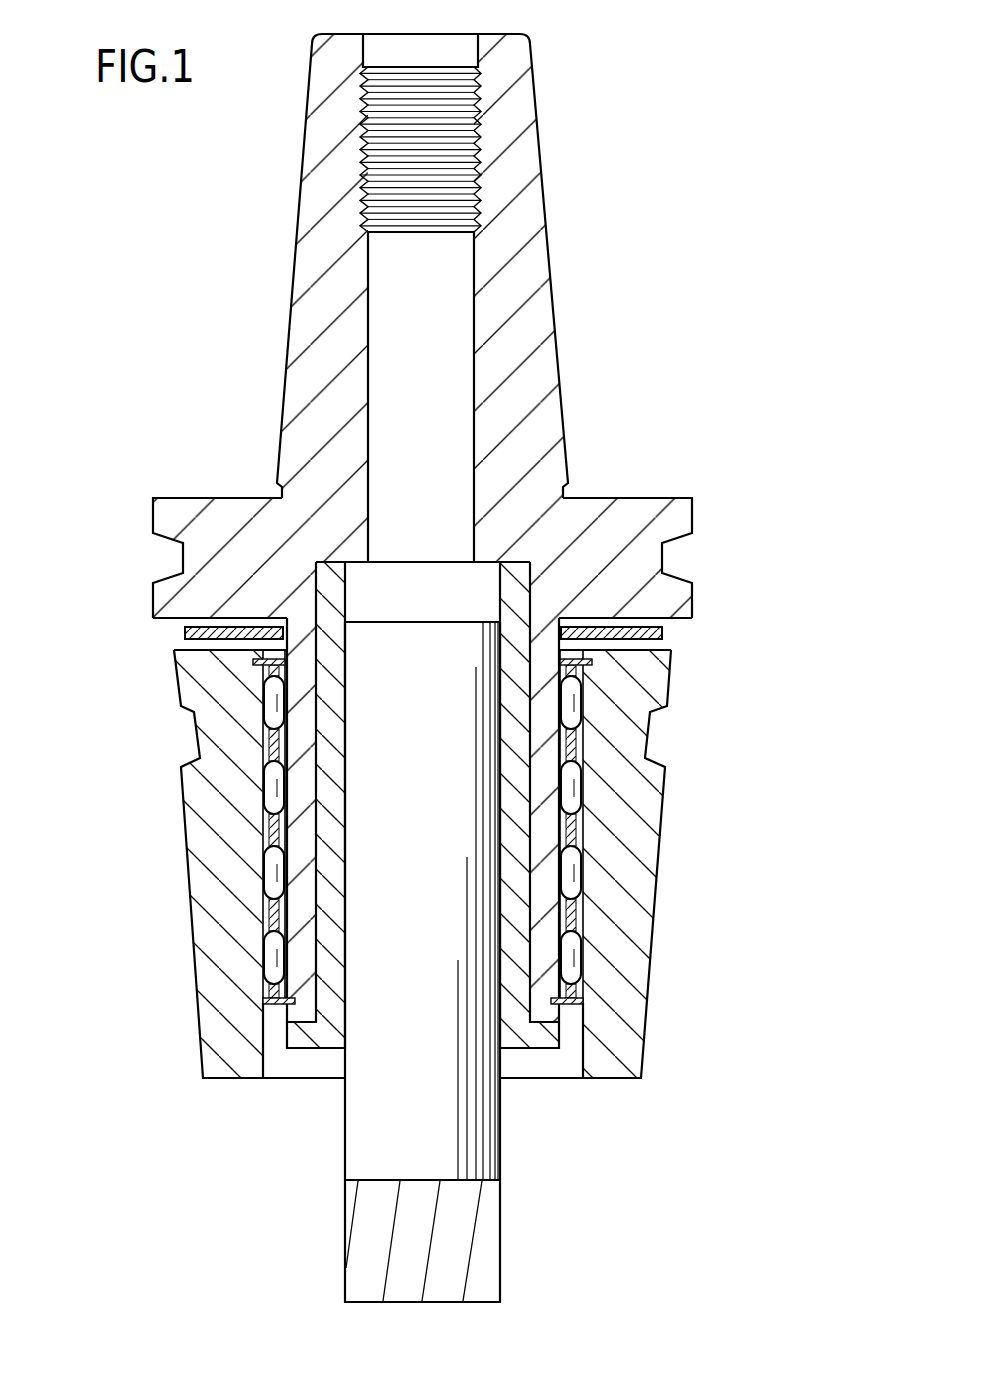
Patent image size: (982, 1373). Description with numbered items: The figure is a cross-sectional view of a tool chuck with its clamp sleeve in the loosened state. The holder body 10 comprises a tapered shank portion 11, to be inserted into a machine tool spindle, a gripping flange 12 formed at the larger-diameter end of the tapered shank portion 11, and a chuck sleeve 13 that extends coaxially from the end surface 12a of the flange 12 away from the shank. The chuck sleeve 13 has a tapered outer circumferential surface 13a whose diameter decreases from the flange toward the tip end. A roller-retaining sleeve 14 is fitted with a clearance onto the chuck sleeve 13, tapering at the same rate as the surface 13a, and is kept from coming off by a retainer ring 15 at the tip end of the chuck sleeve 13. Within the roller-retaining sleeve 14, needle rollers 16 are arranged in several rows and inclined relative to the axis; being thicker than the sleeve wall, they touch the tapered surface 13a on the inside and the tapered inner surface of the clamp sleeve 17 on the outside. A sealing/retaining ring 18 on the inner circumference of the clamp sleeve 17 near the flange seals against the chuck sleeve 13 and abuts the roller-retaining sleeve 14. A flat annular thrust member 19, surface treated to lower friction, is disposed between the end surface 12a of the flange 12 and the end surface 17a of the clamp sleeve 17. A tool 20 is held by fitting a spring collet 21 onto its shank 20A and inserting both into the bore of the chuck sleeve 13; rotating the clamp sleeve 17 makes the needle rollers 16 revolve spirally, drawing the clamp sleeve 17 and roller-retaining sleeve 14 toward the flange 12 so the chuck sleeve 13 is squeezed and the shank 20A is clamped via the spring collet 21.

The holder body 10 is at (547, 198).
The tapered shank portion 11 is at (559, 352).
The gripping flange 12 is at (625, 512).
The end surface 12a is at (185, 620).
The chuck sleeve 13 is at (557, 750).
The tapered outer circumferential surface 13a is at (587, 672).
The roller-retaining sleeve 14 is at (578, 825).
The retainer ring 15 is at (573, 1004).
The needle rollers 16 is at (577, 873).
The clamp sleeve 17 is at (638, 960).
The end surface 17a is at (175, 647).
The sealing/retaining ring 18 is at (585, 660).
The thrust member 19 is at (226, 632).
The tool 20 is at (473, 1133).
The shank 20A is at (378, 1102).
The spring collet 21 is at (503, 995).